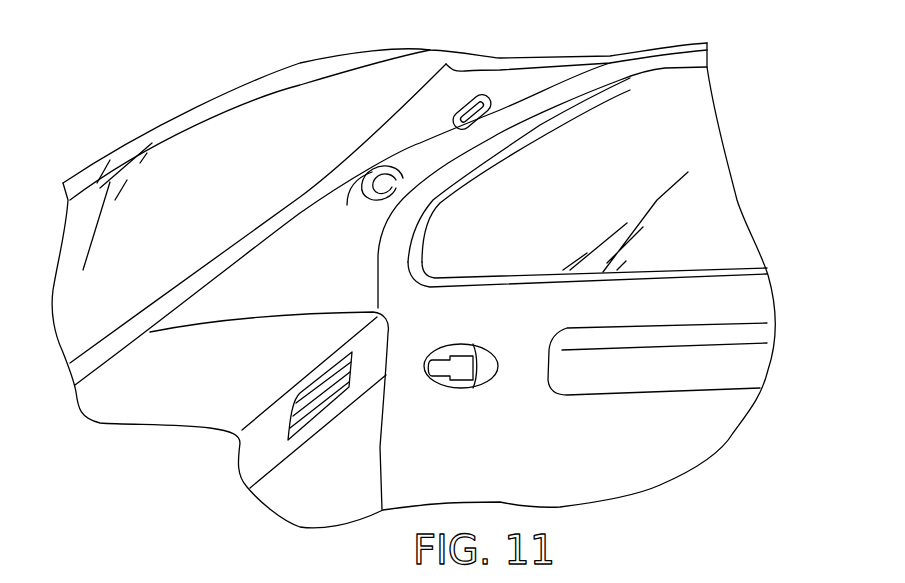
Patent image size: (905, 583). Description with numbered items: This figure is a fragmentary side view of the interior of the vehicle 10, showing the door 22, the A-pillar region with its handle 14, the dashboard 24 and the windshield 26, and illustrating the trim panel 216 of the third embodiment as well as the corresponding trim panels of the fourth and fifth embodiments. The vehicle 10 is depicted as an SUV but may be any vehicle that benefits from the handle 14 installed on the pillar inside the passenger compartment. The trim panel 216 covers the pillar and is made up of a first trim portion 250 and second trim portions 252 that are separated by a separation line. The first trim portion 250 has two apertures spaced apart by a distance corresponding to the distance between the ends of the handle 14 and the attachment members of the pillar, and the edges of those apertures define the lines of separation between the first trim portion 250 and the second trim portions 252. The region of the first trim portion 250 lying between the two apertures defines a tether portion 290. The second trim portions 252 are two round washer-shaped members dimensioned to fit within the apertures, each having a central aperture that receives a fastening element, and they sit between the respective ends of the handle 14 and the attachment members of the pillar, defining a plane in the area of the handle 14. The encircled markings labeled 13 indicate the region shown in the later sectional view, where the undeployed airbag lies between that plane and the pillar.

The vehicle 10 is at (125, 97).
The windshield 26 is at (217, 140).
The tether portion 290 is at (423, 143).
The second trim portion 252 is at (465, 100).
The trim panel 216 is at (538, 83).
The first trim portion 250 is at (540, 127).
The handle 14 is at (430, 167).
The door 22 is at (723, 303).
The dashboard 24 is at (263, 450).
The section indicator for FIG. 13 is at (427, 78).